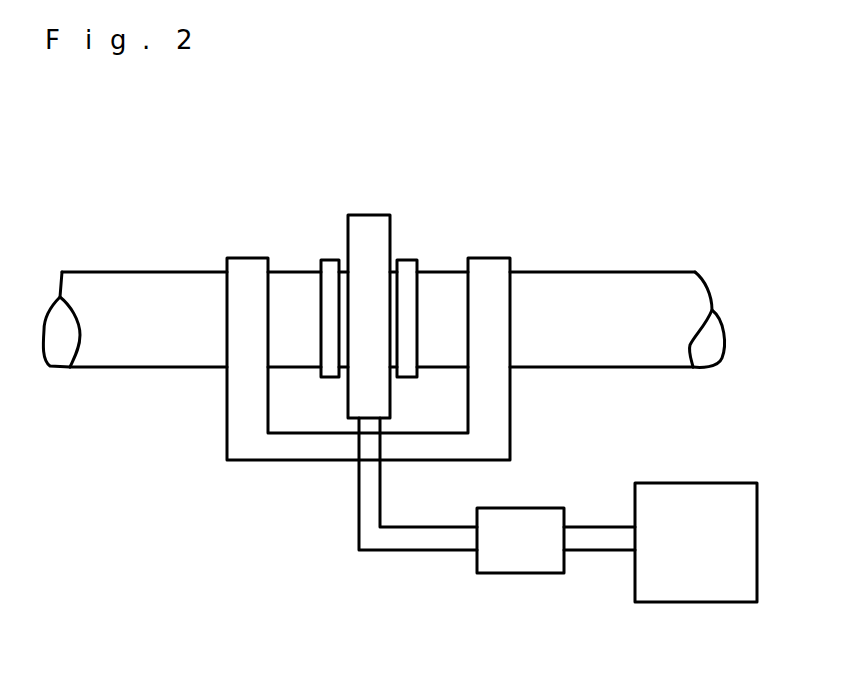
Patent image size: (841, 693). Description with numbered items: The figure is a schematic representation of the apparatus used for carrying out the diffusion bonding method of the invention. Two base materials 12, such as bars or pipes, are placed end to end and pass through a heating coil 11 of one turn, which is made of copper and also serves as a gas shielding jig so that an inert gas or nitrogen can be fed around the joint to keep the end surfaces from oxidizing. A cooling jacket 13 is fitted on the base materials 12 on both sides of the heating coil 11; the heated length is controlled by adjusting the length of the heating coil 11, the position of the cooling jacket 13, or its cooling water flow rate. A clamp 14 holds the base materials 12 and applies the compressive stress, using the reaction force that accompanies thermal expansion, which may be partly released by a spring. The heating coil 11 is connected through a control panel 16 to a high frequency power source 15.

The heating coil 11 is at (372, 232).
The base material 12 is at (143, 298).
The cooling jacket 13 is at (334, 280).
The clamp 14 is at (492, 393).
The high frequency power source 15 is at (695, 527).
The control panel 16 is at (517, 547).